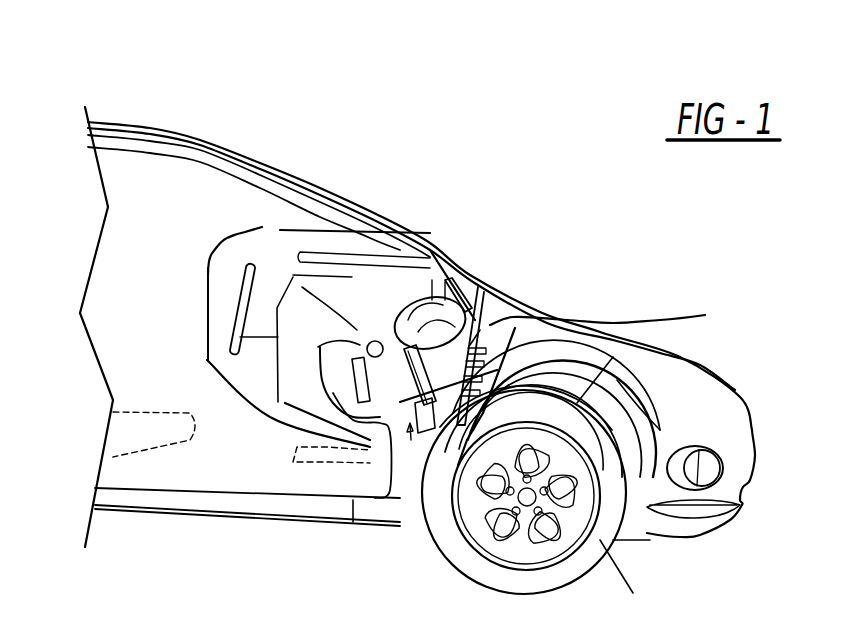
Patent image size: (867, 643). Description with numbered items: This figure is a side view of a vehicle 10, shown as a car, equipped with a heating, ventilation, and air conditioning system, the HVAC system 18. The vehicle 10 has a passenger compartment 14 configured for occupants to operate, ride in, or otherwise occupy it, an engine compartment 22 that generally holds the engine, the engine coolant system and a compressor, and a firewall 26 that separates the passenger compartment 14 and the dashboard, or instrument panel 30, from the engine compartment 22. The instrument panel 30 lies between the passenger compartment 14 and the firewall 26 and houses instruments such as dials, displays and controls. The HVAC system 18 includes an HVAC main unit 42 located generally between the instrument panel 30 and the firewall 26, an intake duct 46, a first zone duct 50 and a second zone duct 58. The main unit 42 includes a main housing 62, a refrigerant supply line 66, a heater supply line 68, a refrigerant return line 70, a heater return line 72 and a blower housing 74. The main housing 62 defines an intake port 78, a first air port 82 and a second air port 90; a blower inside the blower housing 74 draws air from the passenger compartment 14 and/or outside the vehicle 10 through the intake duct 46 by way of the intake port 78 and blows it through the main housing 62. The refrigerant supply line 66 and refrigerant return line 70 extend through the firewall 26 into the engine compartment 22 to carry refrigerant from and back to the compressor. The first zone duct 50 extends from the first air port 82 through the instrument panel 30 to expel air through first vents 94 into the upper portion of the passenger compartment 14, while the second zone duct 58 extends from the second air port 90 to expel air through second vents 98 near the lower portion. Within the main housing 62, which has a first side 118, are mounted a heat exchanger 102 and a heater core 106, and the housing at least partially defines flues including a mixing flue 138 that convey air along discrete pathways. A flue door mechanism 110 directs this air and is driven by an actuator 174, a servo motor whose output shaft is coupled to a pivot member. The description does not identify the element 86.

The vehicle 10 is at (493, 87).
The passenger compartment 14 is at (130, 165).
The HVAC system 18 is at (420, 470).
The engine compartment 22 is at (705, 315).
The firewall 26 is at (480, 330).
The instrument panel 30 is at (302, 287).
The HVAC main unit 42 is at (397, 297).
The intake duct 46 is at (478, 290).
The first zone duct 50 is at (358, 270).
The second zone duct 58 is at (337, 463).
The main housing 62 is at (403, 305).
The refrigerant supply line 66 is at (648, 540).
The heater supply line 68 is at (707, 357).
The refrigerant return line 70 is at (470, 350).
The heater return line 72 is at (680, 537).
The blower housing 74 is at (460, 273).
The intake port 78 is at (487, 283).
The first air port 82 is at (442, 305).
The A-pillar 86 is at (340, 275).
The second air port 90 is at (405, 485).
The first vents 94 is at (300, 253).
The second vents 98 is at (293, 462).
The heat exchanger 102 is at (455, 440).
The heater core 106 is at (440, 357).
The flue door mechanism 110 is at (365, 333).
The first side 118 is at (385, 343).
The mixing flue 138 is at (525, 641).
The actuator 174 is at (362, 340).